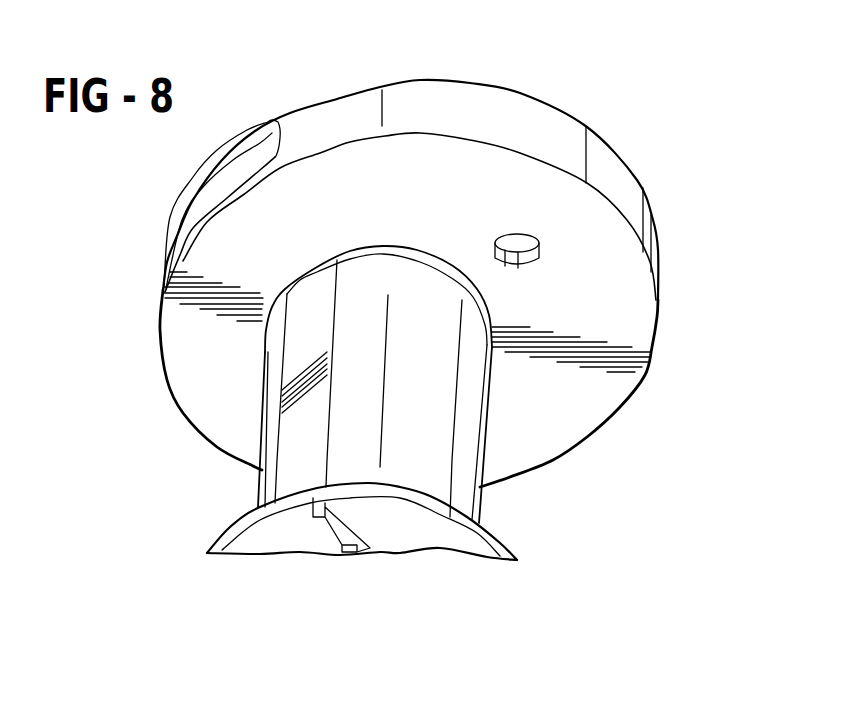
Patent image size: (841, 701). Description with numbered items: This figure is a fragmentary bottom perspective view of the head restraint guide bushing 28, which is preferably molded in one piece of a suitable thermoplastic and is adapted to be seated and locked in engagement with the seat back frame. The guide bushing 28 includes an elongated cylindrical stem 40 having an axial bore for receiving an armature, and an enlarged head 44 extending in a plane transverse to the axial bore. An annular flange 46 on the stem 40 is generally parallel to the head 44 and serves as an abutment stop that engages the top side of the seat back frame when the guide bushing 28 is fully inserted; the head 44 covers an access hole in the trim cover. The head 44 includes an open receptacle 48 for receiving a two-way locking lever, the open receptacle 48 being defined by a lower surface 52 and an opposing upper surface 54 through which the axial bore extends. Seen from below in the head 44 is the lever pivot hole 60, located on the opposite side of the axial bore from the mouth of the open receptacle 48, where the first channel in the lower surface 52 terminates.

The guide bushing 28 is at (557, 107).
The head 44 is at (442, 95).
The lower surface 52 is at (197, 221).
The upper surface 54 is at (237, 165).
The open receptacle 48 is at (269, 125).
The lever pivot hole 60 is at (539, 255).
The elongated cylindrical stem 40 is at (462, 435).
The annular flange 46 is at (257, 535).